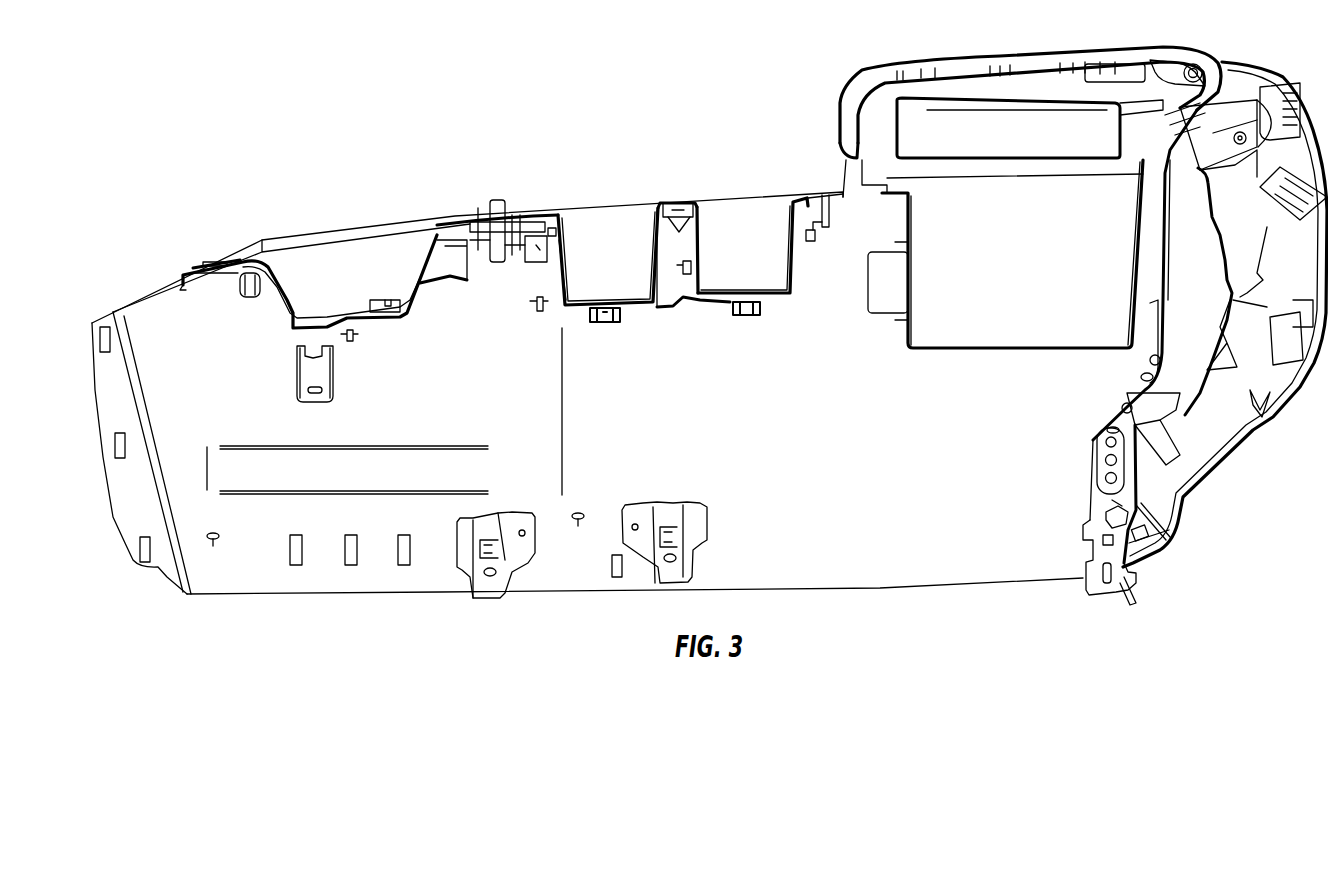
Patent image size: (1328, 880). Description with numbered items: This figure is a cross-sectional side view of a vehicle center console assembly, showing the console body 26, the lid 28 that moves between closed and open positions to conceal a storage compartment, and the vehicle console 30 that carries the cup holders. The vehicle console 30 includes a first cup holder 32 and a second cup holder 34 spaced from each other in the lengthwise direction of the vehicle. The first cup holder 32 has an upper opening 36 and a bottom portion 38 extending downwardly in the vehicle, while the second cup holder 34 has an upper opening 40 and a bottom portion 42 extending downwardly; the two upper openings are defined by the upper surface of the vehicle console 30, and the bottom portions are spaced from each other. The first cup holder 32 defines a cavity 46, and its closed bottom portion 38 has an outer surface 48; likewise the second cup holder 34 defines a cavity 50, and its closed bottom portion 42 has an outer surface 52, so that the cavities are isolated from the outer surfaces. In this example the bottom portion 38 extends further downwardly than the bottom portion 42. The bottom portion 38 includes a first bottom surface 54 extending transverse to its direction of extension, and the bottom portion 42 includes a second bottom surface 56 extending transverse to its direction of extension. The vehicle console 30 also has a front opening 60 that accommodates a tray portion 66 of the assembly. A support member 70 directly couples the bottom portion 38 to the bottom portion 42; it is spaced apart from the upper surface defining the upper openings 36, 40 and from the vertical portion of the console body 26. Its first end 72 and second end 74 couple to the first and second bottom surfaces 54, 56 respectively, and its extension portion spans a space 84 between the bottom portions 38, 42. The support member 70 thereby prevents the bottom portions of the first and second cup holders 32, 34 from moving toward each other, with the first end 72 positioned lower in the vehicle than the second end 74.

The console body 26 is at (680, 307).
The lid 28 is at (1030, 50).
The vehicle console 30 is at (800, 200).
The first cup holder 32 is at (557, 203).
The second cup holder 34 is at (703, 207).
The upper opening 36 is at (612, 210).
The bottom portion 38 is at (550, 280).
The upper opening 40 is at (737, 196).
The bottom portion 42 is at (793, 272).
The cavity 46 is at (580, 236).
The outer surface 48 is at (558, 272).
The cavity 50 is at (747, 233).
The outer surface 52 is at (797, 260).
The first bottom surface 54 is at (565, 300).
The second bottom surface 56 is at (793, 290).
The front opening 60 is at (343, 270).
The tray portion 66 is at (287, 280).
The support member 70 is at (677, 313).
The first end 72 is at (603, 323).
The second end 74 is at (750, 318).
The space 84 is at (693, 207).